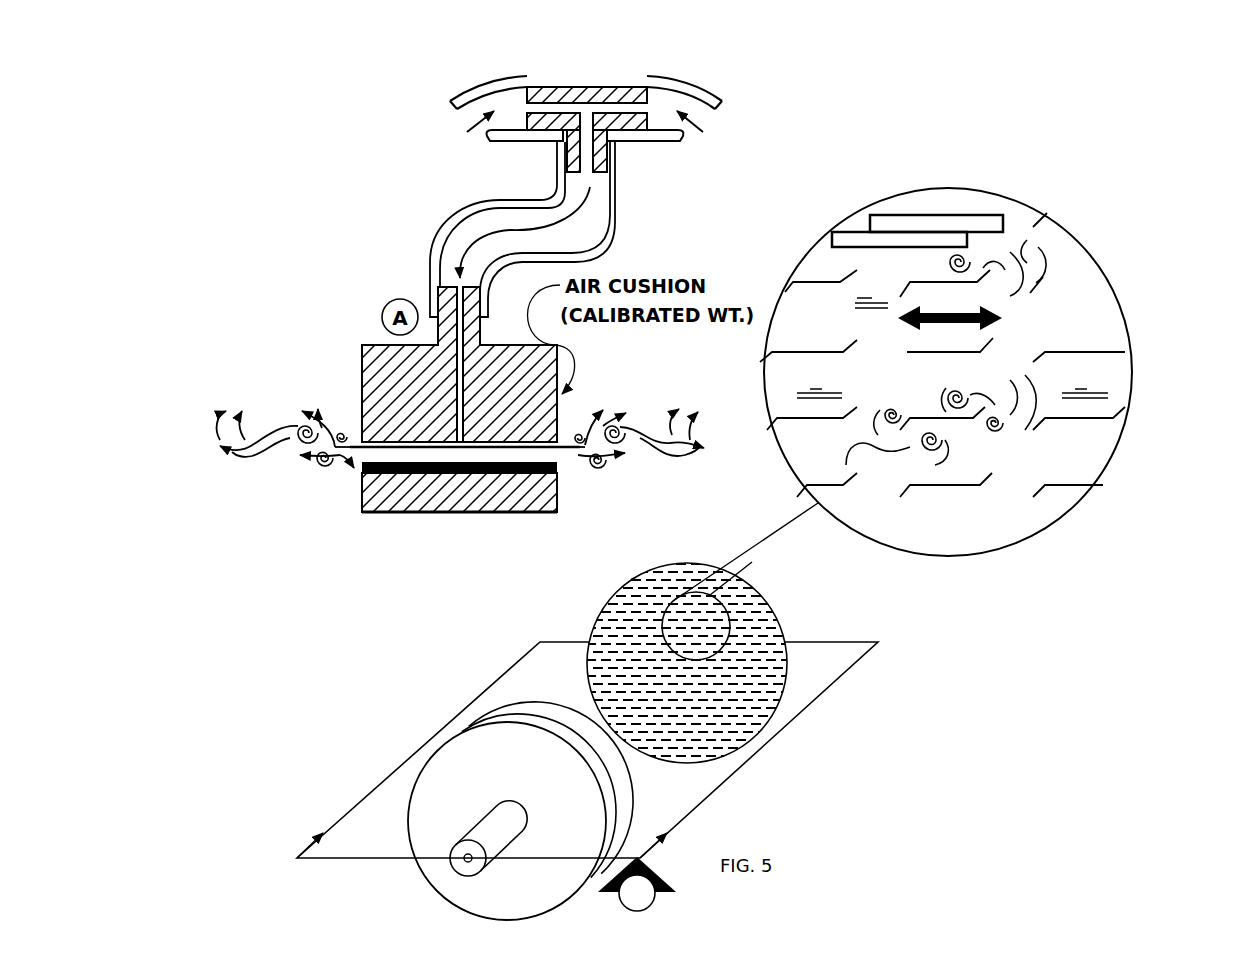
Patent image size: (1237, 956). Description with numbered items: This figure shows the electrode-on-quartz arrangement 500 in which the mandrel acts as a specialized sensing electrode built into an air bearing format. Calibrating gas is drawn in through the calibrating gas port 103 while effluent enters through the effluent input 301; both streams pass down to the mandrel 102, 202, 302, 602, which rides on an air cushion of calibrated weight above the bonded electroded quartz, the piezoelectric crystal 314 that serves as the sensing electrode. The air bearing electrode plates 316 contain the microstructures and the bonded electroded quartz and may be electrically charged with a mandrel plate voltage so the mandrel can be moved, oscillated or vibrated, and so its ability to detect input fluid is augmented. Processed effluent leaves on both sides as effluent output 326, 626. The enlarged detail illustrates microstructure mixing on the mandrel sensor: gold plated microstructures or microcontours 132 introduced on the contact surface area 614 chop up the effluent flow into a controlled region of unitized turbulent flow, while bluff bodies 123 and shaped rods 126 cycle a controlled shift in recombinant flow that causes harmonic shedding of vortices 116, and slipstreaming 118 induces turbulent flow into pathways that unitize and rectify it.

The calibrating gas port 103 is at (417, 142).
The effluent input 301 is at (756, 144).
The effluent output 326 is at (287, 392).
The effluent output 626 is at (661, 409).
The bluff bodies 123 is at (920, 236).
The contact surface area 614 is at (1037, 185).
The gold plated microstructures 132 is at (1070, 343).
The shaped rods 126 is at (1097, 388).
The vortices 116 is at (885, 415).
The slipstreaming 118 is at (905, 450).
The mandrel 102 is at (563, 494).
The mandrel 202 is at (563, 494).
The mandrel 302 is at (563, 494).
The mandrel 602 is at (563, 456).
The piezoelectric crystal 314 is at (356, 467).
The air bearing sensor system 500 is at (306, 663).
The air bearing electrode plates 316 is at (594, 767).